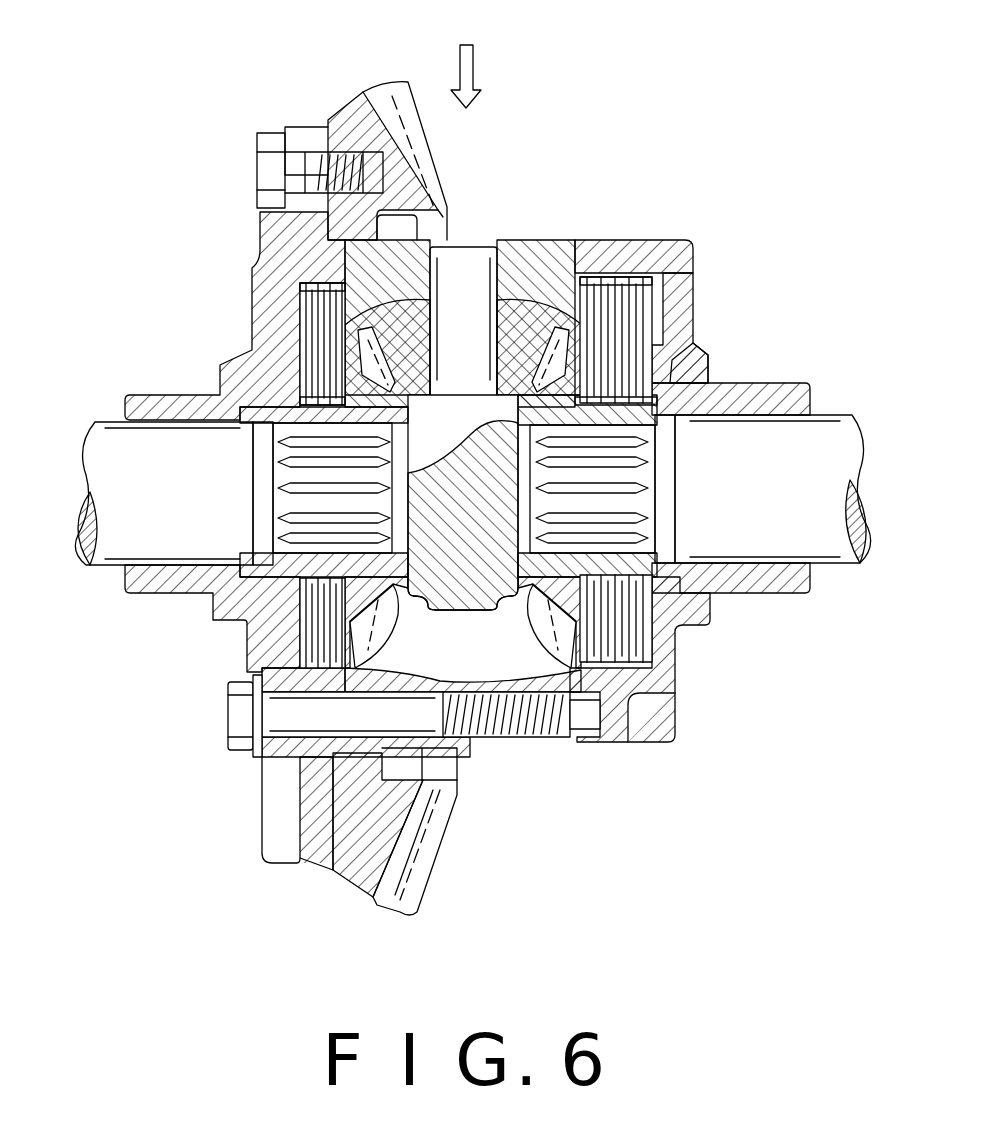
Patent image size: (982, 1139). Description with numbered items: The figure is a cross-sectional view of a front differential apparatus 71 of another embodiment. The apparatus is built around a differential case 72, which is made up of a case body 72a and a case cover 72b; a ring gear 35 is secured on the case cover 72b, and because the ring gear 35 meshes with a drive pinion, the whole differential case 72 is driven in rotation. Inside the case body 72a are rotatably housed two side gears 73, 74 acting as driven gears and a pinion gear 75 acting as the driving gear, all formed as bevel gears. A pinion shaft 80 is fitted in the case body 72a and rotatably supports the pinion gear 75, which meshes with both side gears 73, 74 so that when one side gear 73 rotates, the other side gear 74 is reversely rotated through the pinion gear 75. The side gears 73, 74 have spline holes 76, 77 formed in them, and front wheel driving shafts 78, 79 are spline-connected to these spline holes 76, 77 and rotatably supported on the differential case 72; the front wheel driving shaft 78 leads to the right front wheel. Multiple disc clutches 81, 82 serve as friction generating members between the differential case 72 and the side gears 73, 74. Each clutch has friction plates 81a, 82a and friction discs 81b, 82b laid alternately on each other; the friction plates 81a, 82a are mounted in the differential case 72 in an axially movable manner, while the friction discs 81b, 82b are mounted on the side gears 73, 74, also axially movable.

The ring gear 35 is at (400, 88).
The front differential apparatus 71 is at (643, 106).
The differential case 72 is at (652, 239).
The case body 72a is at (687, 362).
The case cover 72b is at (305, 248).
The side gear 73 is at (565, 660).
The side gear 74 is at (252, 698).
The pinion gear 75 is at (520, 300).
The spline hole 76 is at (690, 628).
The spline hole 77 is at (240, 623).
The front wheel driving shaft 78 is at (830, 452).
The front wheel driving shaft 79 is at (102, 452).
The pinion shaft 80 is at (470, 272).
The multiple disc clutch 81 is at (658, 300).
The friction plate 81a is at (660, 270).
The friction disc 81b is at (642, 388).
The multiple disc clutch 82 is at (302, 342).
The friction plate 82a is at (302, 302).
The friction disc 82b is at (302, 386).